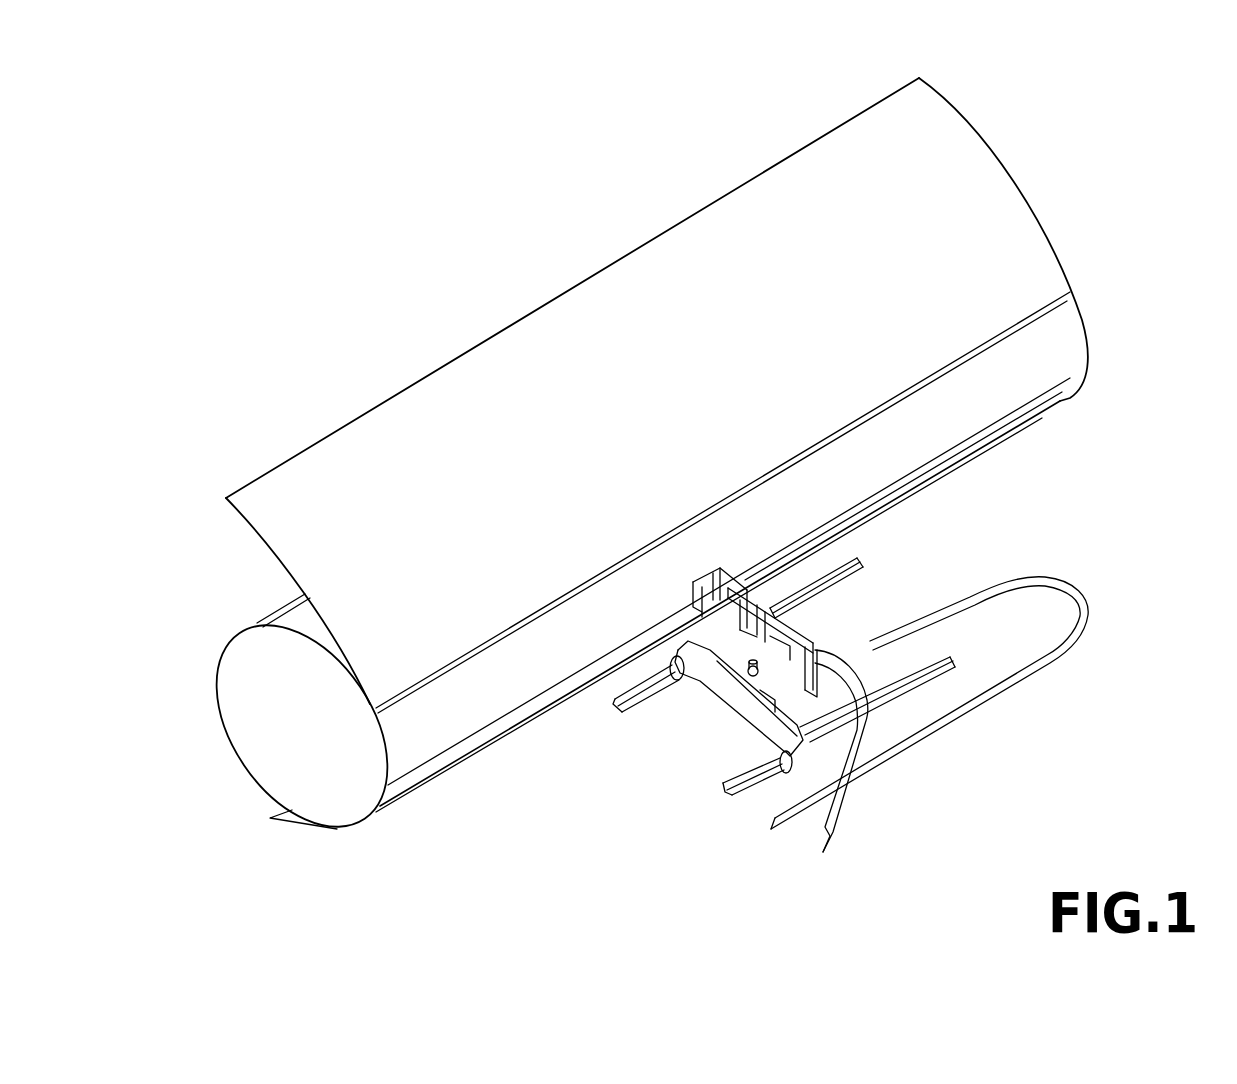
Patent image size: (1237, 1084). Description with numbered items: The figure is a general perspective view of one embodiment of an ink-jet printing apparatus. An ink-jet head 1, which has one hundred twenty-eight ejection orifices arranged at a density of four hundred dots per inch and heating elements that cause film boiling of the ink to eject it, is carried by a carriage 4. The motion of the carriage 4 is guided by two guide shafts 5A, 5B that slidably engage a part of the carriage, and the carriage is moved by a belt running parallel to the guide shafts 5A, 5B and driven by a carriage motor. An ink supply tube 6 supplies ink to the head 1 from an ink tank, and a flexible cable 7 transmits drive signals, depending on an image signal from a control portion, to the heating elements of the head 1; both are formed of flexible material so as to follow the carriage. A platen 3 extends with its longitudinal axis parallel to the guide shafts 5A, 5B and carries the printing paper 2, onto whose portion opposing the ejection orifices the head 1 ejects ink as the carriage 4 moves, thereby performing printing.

The ink-jet head 1 is at (713, 572).
The printing paper 2 is at (338, 458).
The platen 3 is at (258, 742).
The carriage 4 is at (717, 693).
The guide shaft 5A is at (643, 699).
The guide shaft 5B is at (745, 790).
The ink supply tube 6 is at (942, 737).
The flexible cable 7 is at (829, 672).